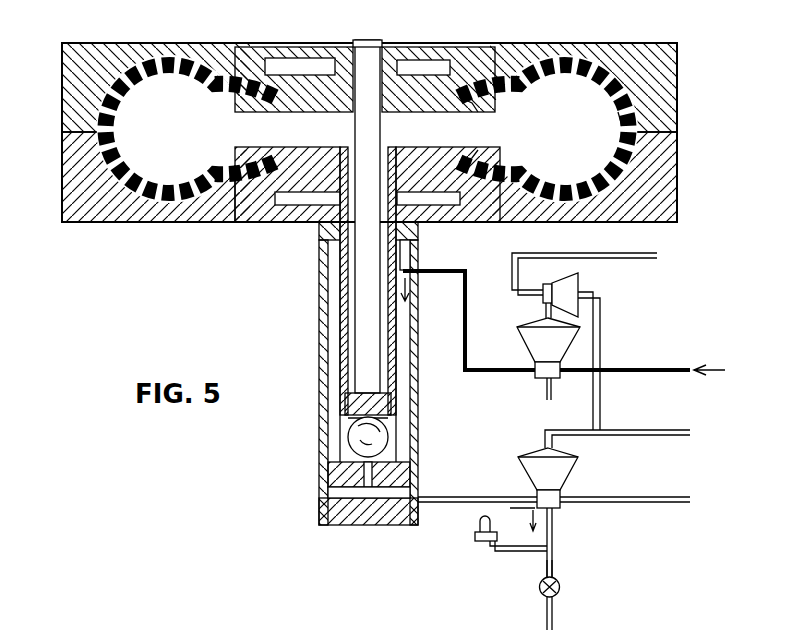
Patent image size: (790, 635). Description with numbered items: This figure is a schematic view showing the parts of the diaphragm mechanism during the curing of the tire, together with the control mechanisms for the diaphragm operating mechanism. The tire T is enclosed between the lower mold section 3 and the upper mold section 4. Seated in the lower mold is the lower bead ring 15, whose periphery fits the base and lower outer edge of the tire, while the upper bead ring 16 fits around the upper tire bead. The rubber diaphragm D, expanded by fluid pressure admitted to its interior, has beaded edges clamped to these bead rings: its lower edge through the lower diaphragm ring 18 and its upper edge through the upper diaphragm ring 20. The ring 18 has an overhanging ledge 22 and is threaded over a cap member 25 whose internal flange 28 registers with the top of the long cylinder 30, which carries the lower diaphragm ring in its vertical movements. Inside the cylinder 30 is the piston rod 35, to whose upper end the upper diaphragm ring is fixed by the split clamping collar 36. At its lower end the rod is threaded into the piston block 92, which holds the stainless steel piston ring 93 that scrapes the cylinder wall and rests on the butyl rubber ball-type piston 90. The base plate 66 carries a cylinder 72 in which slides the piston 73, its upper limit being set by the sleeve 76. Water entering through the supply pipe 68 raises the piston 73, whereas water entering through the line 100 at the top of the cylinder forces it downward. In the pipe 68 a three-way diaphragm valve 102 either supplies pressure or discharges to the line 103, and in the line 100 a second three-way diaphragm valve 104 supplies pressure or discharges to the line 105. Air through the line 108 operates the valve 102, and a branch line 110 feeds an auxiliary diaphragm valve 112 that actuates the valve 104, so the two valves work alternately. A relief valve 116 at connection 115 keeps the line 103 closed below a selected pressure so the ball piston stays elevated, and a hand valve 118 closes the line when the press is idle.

The lower mold section 3 is at (199, 222).
The upper mold section 4 is at (196, 46).
The lower bead ring 15 is at (255, 186).
The upper bead ring 16 is at (490, 62).
The lower diaphragm ring 18 is at (468, 160).
The upper diaphragm ring 20 is at (468, 108).
The overhanging ledge 22 is at (315, 150).
The cap member 25 is at (402, 150).
The internal flange 28 is at (340, 165).
The cylinder 30 is at (392, 372).
The piston rod 35 is at (352, 357).
The split clamping collar 36 is at (393, 56).
The base plate 66 is at (389, 522).
The fluid pressure supply pipe 68 is at (475, 490).
The cylinder 72 is at (418, 396).
The piston 73 is at (396, 479).
The sleeve 76 is at (408, 243).
The ball-type piston 90 is at (384, 438).
The piston block 92 is at (350, 413).
The piston ring 93 is at (346, 406).
The line 100 is at (467, 311).
The three-way diaphragm valve 102 is at (562, 489).
The line 103 is at (553, 571).
The three-way diaphragm valve 104 is at (540, 381).
The line 105 is at (551, 388).
The line 108 is at (645, 430).
The branch line 110 is at (600, 318).
The auxiliary diaphragm valve 112 is at (572, 290).
The connection 115 is at (552, 546).
The relief valve 116 is at (478, 541).
The hand valve 118 is at (561, 590).
The tire T is at (632, 110).
The diaphragm D is at (620, 120).